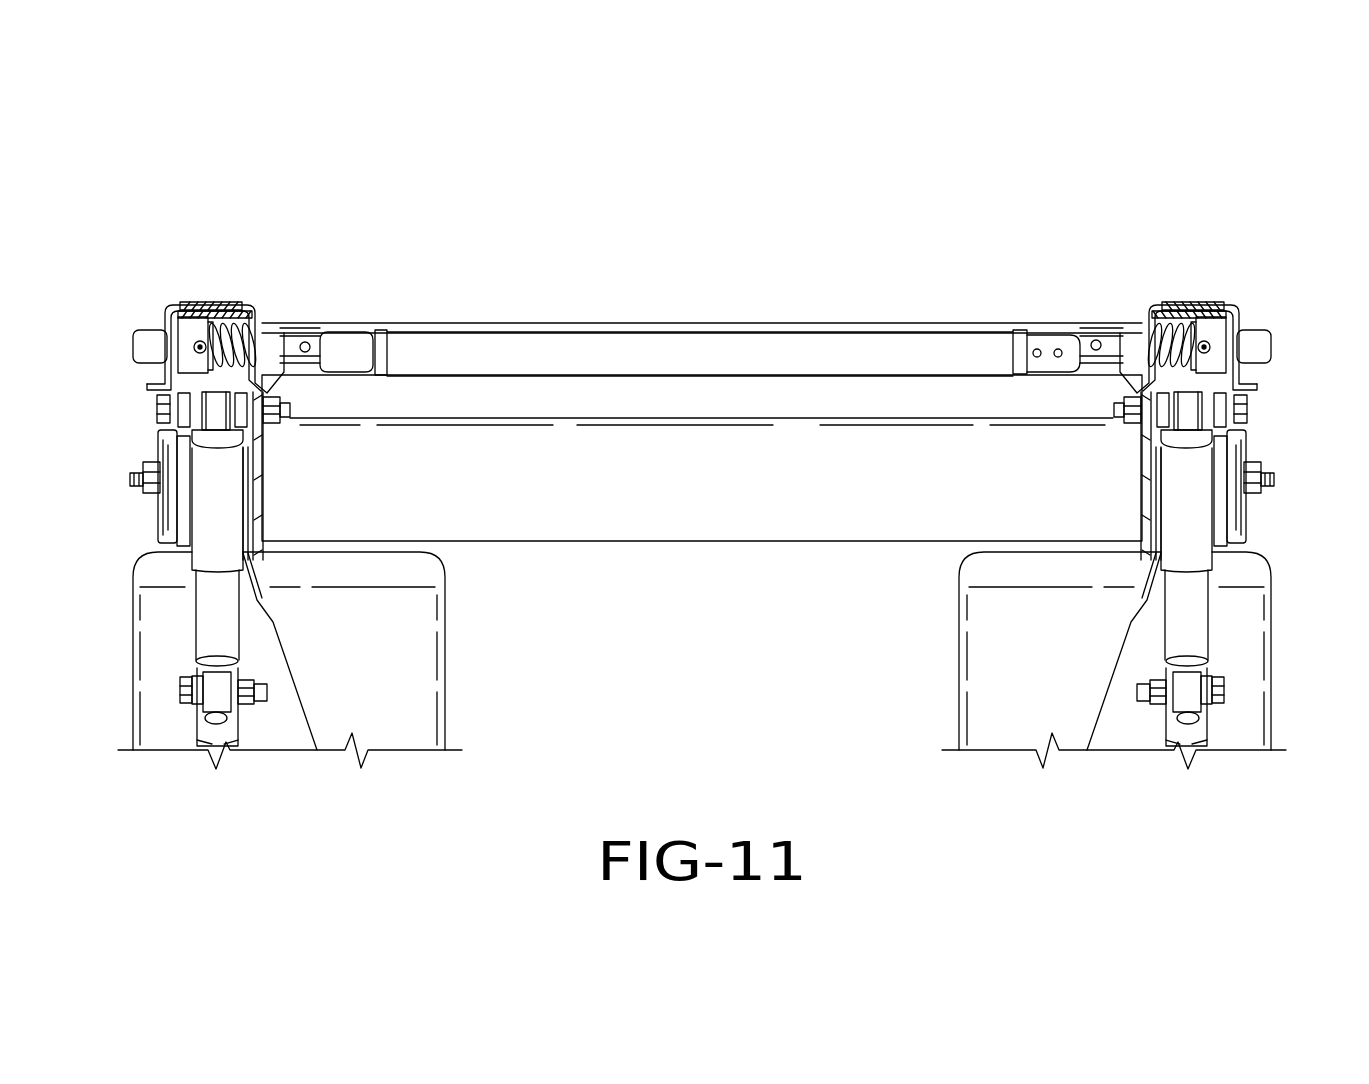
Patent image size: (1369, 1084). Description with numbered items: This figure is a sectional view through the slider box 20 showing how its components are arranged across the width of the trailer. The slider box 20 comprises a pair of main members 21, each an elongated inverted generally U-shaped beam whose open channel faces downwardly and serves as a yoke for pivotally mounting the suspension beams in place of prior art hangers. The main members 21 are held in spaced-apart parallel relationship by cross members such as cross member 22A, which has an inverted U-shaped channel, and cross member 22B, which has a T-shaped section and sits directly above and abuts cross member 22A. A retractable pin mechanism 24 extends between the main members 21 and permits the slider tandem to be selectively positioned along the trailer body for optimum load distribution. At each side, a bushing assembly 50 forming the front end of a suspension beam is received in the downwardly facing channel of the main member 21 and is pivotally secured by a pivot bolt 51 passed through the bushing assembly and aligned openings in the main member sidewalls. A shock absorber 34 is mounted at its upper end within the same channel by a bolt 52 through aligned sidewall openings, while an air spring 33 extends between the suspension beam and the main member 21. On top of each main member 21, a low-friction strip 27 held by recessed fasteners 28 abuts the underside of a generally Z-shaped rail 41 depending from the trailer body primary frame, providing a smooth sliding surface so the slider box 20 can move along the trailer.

The slider box 20 is at (893, 250).
The main member 21 is at (260, 308).
The cross member 22A is at (716, 548).
The cross member 22B is at (675, 316).
The retractable pin mechanism 24 is at (490, 326).
The low-friction strip 27 is at (197, 311).
The recessed fastener 28 is at (212, 318).
The air spring 33 is at (445, 702).
The shock absorber 34 is at (213, 541).
The rail 41 is at (160, 314).
The bushing assembly 50 is at (187, 500).
The pivot bolt 51 is at (137, 477).
The bolt 52 is at (160, 408).